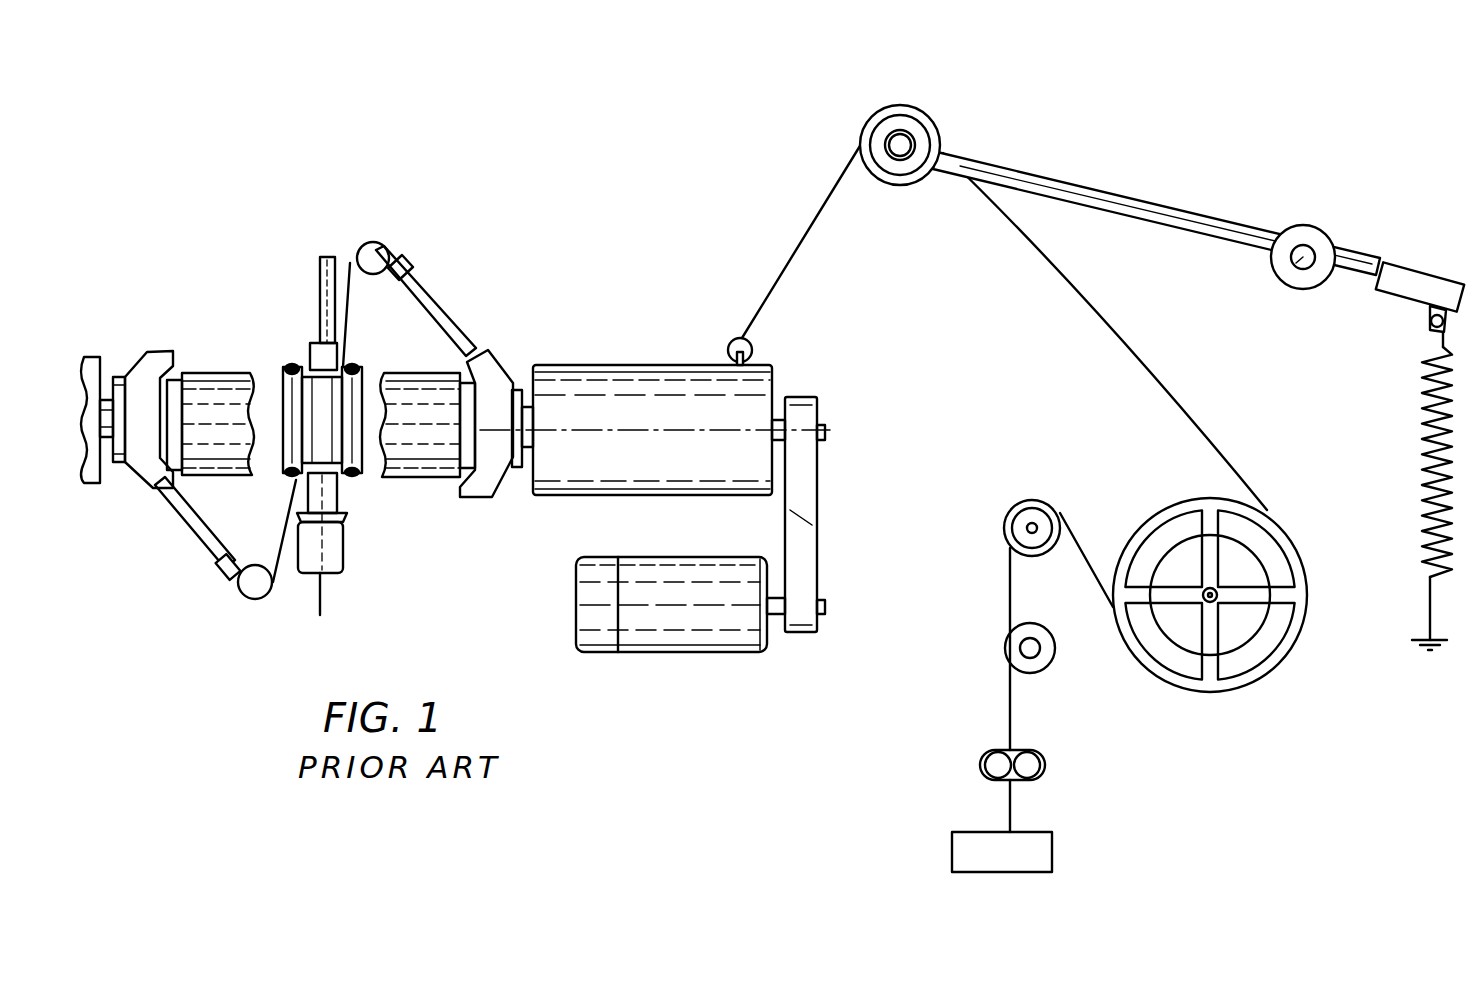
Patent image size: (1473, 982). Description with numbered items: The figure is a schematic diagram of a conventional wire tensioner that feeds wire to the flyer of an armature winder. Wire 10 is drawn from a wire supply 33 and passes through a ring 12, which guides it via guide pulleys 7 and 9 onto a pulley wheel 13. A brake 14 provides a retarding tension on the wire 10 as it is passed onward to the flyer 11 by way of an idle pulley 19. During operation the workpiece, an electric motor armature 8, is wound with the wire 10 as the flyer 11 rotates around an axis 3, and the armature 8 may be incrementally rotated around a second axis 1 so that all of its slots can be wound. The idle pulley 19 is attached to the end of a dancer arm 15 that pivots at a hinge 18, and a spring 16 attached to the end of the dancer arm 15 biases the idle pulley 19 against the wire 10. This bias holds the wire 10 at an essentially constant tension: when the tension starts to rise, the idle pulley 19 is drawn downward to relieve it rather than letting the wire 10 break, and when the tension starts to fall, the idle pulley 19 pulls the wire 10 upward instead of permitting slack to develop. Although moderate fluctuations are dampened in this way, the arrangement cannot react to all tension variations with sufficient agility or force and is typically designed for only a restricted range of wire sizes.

The axis 1 is at (330, 248).
The axis 3 is at (832, 430).
The guide pulley 7 is at (1007, 648).
The electric motor armature 8 is at (352, 468).
The guide pulley 9 is at (1010, 517).
The wire 10 is at (778, 263).
The flyer 11 is at (424, 293).
The ring 12 is at (1046, 764).
The pulley wheel 13 is at (1277, 660).
The brake 14 is at (1250, 563).
The dancer arm 15 is at (1126, 181).
The spring 16 is at (1422, 420).
The hinge 18 is at (1305, 255).
The idle pulley 19 is at (913, 113).
The wire supply 33 is at (1052, 852).